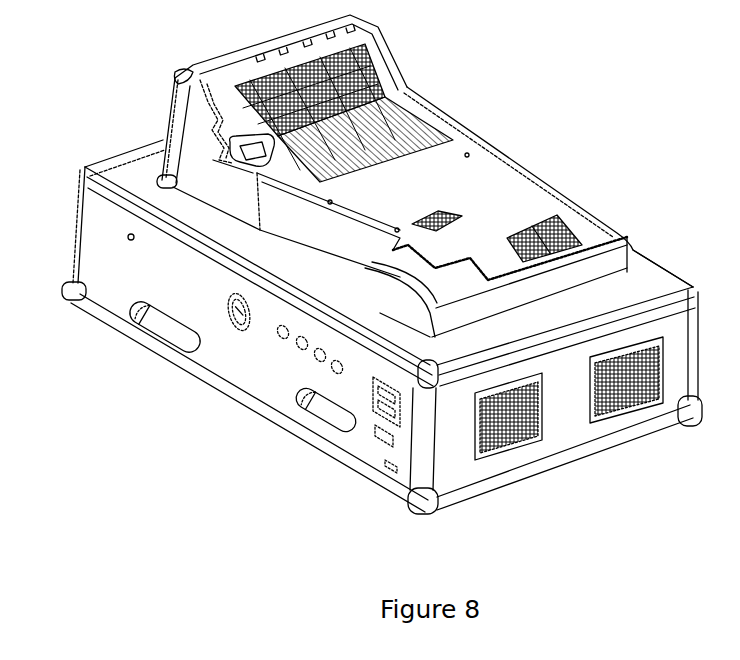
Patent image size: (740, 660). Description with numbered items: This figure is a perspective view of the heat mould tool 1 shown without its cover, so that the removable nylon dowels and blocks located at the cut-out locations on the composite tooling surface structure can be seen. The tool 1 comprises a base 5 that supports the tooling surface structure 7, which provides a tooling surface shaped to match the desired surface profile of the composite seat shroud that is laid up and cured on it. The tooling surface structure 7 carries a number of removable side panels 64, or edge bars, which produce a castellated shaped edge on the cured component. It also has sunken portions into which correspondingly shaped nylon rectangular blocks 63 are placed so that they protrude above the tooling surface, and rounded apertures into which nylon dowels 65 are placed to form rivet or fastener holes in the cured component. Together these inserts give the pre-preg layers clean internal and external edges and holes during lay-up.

The tool 1 is at (110, 123).
The base 5 is at (528, 487).
The tooling surface structure 7 is at (208, 207).
The nylon rectangular blocks 63 is at (437, 217).
The removable side panels 64 is at (213, 128).
The nylon dowels 65 is at (467, 155).